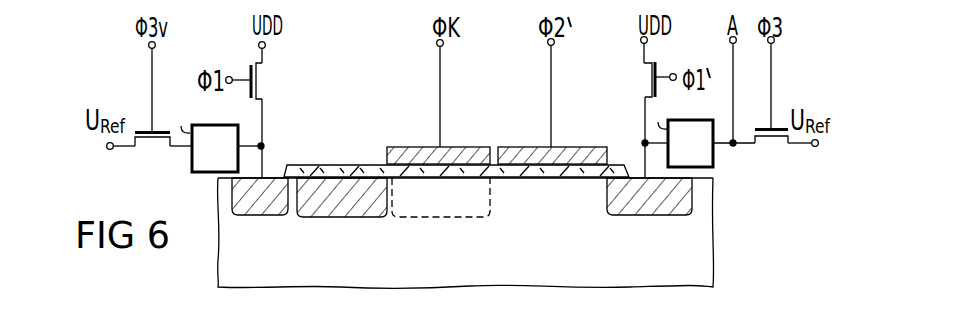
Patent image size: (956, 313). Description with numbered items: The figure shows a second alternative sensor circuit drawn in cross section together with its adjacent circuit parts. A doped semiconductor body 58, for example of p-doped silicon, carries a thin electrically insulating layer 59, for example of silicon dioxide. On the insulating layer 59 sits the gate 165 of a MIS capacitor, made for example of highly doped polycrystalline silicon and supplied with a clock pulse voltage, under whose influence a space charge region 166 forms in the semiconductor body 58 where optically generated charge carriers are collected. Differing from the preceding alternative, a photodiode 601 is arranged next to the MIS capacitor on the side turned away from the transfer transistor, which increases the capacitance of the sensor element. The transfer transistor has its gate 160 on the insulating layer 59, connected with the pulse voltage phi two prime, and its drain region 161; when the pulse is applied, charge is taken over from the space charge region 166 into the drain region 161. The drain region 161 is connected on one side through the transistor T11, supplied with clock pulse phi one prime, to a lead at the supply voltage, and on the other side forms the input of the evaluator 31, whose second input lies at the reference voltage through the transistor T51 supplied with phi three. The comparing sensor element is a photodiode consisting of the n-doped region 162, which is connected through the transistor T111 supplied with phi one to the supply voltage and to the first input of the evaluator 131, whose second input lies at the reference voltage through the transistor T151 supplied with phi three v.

The evaluator 131 is at (206, 137).
The evaluator 31 is at (692, 133).
The insulating layer 59 is at (324, 167).
The gate 165 is at (402, 153).
The gate 160 is at (520, 153).
The n-doped region 162 is at (258, 208).
The photodiode 601 is at (347, 208).
The space charge region 166 is at (428, 215).
The drain region 161 is at (647, 205).
The semiconductor body 58 is at (703, 237).
The transistor T151 is at (151, 157).
The transistor T111 is at (274, 82).
The transistor T11 is at (635, 79).
The transistor T51 is at (771, 155).